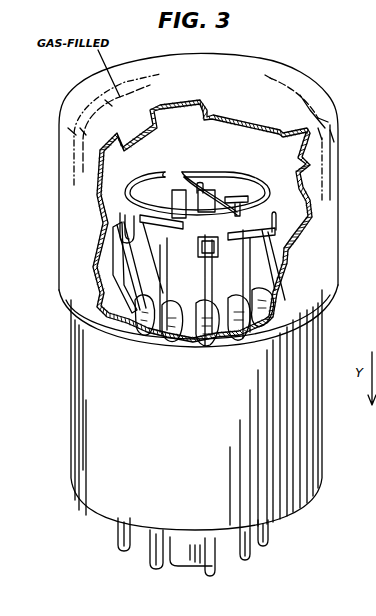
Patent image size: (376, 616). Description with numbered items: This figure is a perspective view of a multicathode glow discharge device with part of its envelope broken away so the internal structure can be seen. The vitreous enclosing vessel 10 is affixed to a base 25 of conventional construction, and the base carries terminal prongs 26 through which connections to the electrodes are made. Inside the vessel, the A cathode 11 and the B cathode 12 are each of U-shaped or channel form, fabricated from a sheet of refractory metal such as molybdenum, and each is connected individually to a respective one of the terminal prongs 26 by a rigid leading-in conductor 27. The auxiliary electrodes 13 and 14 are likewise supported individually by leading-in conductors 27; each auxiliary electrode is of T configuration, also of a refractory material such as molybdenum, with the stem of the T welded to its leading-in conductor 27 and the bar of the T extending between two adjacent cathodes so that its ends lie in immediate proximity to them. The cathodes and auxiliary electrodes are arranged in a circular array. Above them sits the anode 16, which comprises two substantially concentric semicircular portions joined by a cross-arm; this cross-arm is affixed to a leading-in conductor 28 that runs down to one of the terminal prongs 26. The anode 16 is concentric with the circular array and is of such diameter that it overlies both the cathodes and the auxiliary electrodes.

The vitreous enclosing vessel 10 is at (290, 74).
The A cathode 11 is at (118, 218).
The B cathode 12 is at (272, 213).
The auxiliary electrode 13 is at (135, 292).
The auxiliary electrode 14 is at (283, 253).
The anode 16 is at (233, 173).
The base 25 is at (78, 417).
The terminal prongs 26 is at (207, 567).
The leading-in conductors 27 is at (305, 290).
The leading-in conductor 28 is at (195, 297).